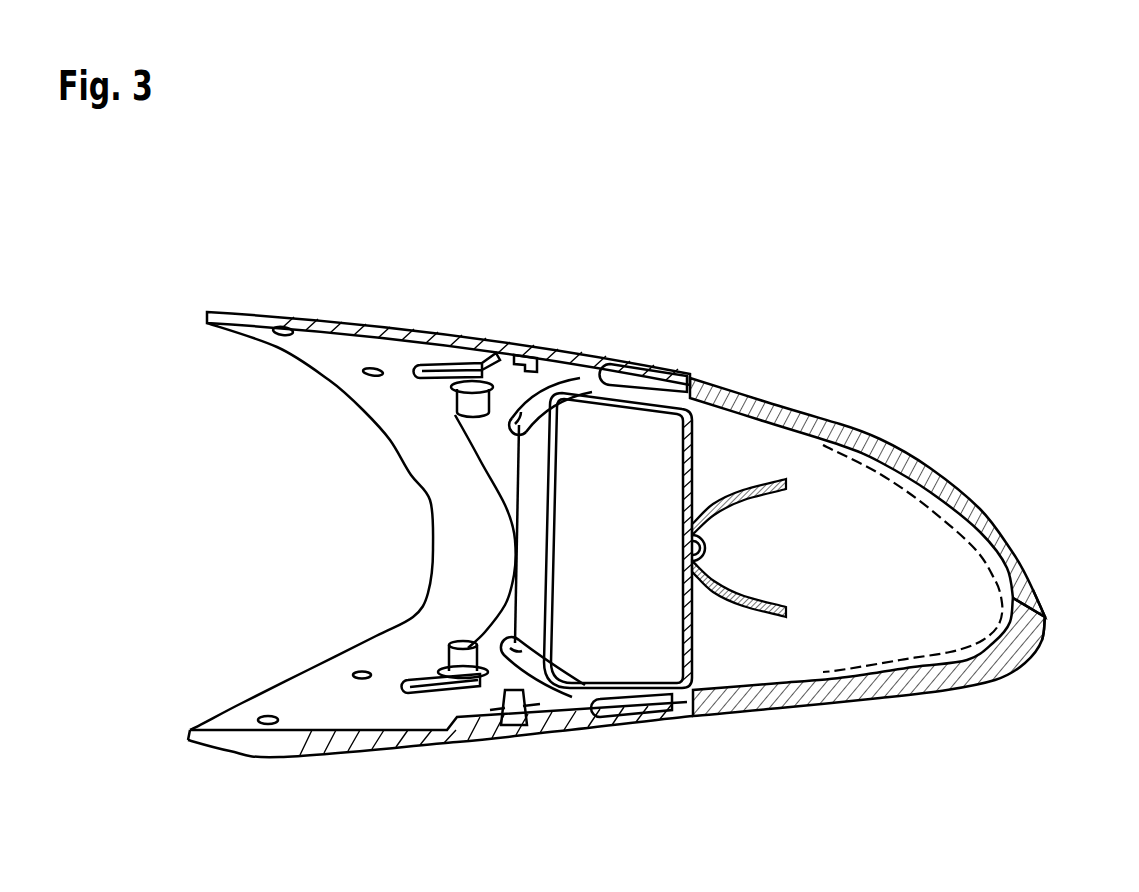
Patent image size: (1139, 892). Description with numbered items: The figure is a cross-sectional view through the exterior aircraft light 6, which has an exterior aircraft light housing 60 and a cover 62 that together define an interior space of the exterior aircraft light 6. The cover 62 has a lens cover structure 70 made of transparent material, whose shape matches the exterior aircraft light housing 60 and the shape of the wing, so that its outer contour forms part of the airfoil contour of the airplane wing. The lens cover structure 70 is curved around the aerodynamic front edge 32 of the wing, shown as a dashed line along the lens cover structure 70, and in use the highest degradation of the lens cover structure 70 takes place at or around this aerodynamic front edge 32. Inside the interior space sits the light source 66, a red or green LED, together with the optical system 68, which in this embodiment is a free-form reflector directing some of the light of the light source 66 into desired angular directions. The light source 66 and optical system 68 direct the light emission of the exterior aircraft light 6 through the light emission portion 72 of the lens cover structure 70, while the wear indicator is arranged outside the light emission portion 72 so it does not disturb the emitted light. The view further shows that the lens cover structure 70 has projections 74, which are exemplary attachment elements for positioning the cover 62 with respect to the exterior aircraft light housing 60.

The exterior aircraft light 6 is at (655, 511).
The aerodynamic front edge 32 is at (1048, 628).
The exterior aircraft light housing 60 is at (574, 717).
The cover 62 is at (906, 509).
The light source 66 is at (692, 549).
The optical system 68 is at (736, 606).
The lens cover structure 70 is at (750, 404).
The light emission portion 72 is at (1012, 526).
The projections 74 is at (677, 382).